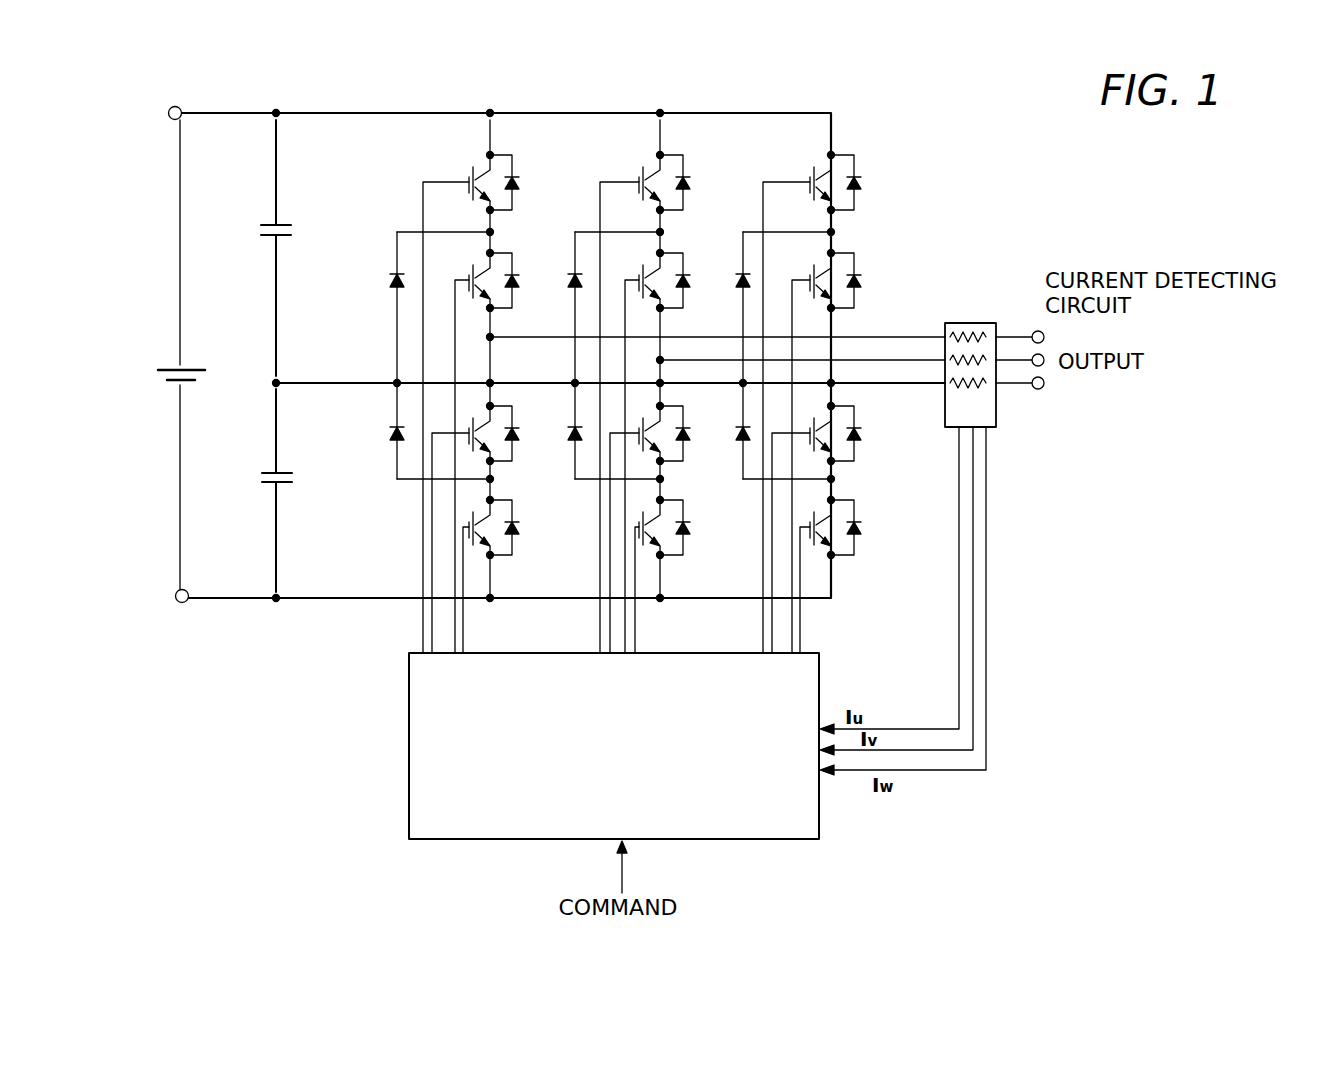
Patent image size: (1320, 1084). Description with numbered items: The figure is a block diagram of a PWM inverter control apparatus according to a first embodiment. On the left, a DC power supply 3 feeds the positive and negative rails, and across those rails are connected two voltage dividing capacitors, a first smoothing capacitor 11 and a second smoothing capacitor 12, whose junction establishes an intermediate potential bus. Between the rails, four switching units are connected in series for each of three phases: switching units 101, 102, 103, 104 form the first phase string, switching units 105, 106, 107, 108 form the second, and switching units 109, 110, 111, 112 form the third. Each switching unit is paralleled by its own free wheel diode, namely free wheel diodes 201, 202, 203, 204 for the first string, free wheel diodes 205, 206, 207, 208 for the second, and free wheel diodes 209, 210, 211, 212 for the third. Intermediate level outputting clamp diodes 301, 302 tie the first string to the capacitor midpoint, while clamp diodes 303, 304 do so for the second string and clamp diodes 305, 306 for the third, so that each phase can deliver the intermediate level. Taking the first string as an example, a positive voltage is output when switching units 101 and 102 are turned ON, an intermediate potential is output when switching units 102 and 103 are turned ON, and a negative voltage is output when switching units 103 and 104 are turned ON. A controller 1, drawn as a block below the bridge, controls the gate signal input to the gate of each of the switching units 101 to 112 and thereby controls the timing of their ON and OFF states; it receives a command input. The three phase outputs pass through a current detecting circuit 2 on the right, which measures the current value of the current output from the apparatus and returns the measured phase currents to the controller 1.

The controller 1 is at (409, 755).
The current detecting circuit 2 is at (990, 313).
The DC power supply 3 is at (165, 369).
The voltage dividing capacitor 11 is at (262, 226).
The voltage dividing capacitor 12 is at (268, 473).
The switching unit 101 is at (466, 176).
The switching unit 102 is at (464, 282).
The switching unit 103 is at (472, 424).
The switching unit 104 is at (472, 518).
The switching unit 105 is at (642, 168).
The switching unit 106 is at (640, 281).
The switching unit 107 is at (642, 424).
The switching unit 108 is at (642, 518).
The switching unit 109 is at (813, 168).
The switching unit 110 is at (812, 274).
The switching unit 111 is at (813, 424).
The switching unit 112 is at (813, 518).
The free wheel diode 201 is at (516, 181).
The free wheel diode 202 is at (518, 282).
The free wheel diode 203 is at (519, 437).
The free wheel diode 204 is at (518, 524).
The free wheel diode 205 is at (686, 181).
The free wheel diode 206 is at (689, 281).
The free wheel diode 207 is at (689, 436).
The free wheel diode 208 is at (688, 528).
The free wheel diode 209 is at (858, 181).
The free wheel diode 210 is at (859, 281).
The free wheel diode 211 is at (861, 437).
The free wheel diode 212 is at (861, 532).
The clamp diode 301 is at (392, 289).
The clamp diode 302 is at (392, 444).
The clamp diode 303 is at (569, 290).
The clamp diode 304 is at (569, 444).
The clamp diode 305 is at (737, 290).
The clamp diode 306 is at (737, 441).